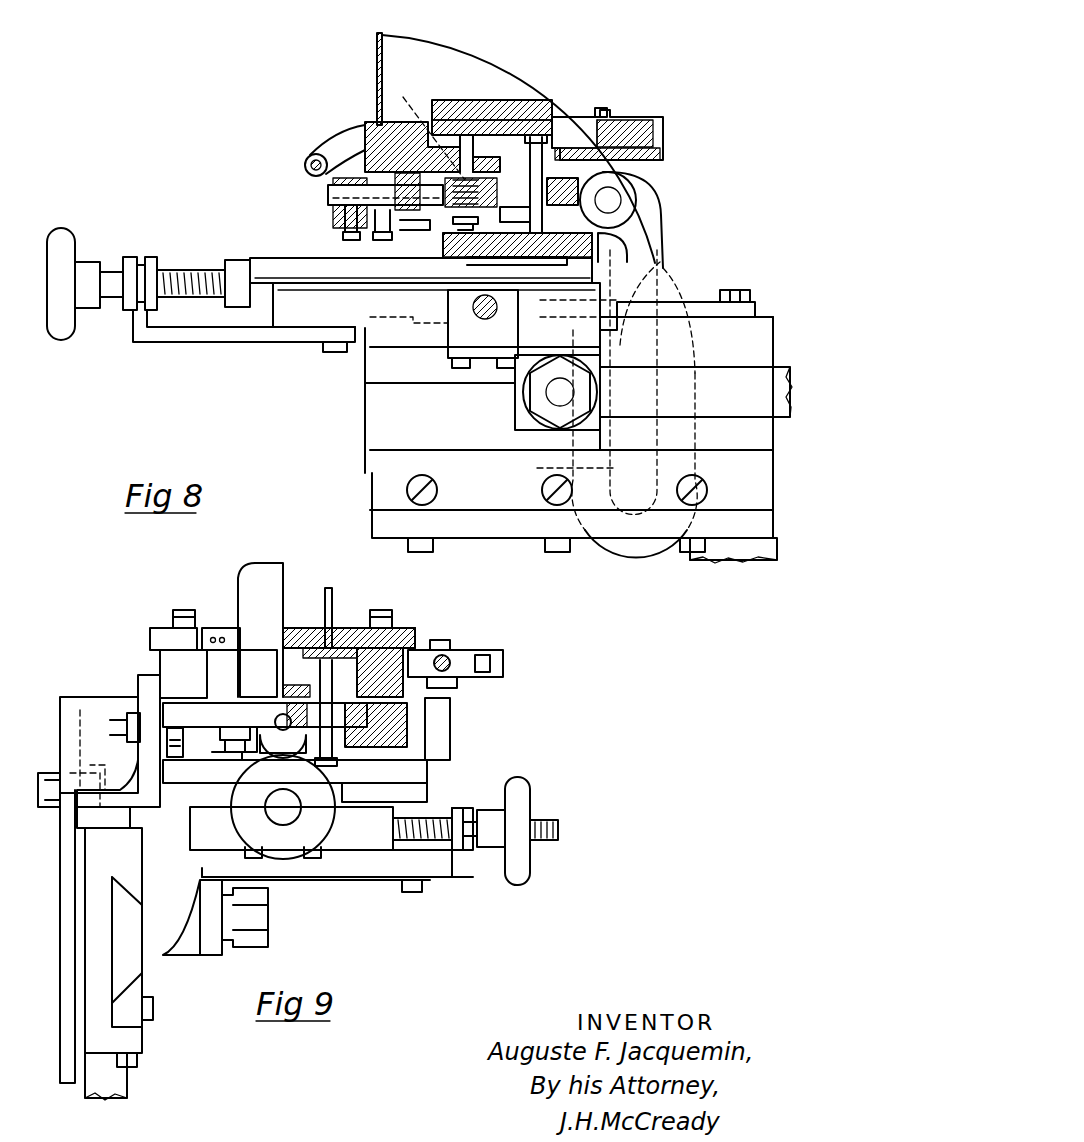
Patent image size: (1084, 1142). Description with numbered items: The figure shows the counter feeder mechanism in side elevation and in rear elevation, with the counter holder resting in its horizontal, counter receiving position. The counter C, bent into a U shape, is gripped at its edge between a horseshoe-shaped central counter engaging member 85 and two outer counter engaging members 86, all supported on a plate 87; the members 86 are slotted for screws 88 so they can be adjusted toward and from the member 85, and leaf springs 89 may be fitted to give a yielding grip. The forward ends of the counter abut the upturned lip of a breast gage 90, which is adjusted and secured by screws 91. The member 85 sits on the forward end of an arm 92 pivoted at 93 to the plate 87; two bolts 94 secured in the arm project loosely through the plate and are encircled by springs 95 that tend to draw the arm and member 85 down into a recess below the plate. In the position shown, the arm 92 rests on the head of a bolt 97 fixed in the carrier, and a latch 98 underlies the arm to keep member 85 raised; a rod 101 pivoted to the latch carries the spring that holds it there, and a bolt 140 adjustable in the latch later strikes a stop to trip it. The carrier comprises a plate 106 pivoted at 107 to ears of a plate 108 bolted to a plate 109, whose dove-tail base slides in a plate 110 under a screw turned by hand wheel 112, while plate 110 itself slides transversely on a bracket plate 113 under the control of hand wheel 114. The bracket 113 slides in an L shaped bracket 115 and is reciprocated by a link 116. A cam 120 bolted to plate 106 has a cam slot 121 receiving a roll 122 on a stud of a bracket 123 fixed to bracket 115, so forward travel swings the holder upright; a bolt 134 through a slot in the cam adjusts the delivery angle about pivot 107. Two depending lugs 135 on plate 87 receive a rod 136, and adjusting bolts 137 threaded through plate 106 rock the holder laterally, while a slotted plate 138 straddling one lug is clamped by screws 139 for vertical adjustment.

In FIG. 8, the counter C is at (460, 57).
In FIG. 9, the counter C is at (275, 580).
In FIG. 8, the central counter engaging member 85 is at (520, 105).
In FIG. 9, the central counter engaging member 85 is at (293, 628).
In FIG. 8, the outer counter engaging members 86 is at (376, 115).
In FIG. 9, the outer counter engaging members 86 is at (160, 632).
In FIG. 8, the plate 87 is at (365, 128).
In FIG. 9, the plate 87 is at (412, 652).
In FIG. 9, the screws 88 is at (182, 615).
In FIG. 9, the leaf springs 89 is at (215, 625).
In FIG. 8, the breast gage 90 is at (580, 118).
In FIG. 8, the screws 91 is at (598, 110).
In FIG. 8, the arm 92 is at (492, 100).
In FIG. 9, the arm 92 is at (355, 628).
In FIG. 8, the pivot 93 is at (310, 165).
In FIG. 9, the pivot 93 is at (240, 688).
In FIG. 8, the bolts 94 is at (467, 140).
In FIG. 9, the bolts 94 is at (235, 752).
In FIG. 8, the springs 95 is at (426, 127).
In FIG. 8, the bolt 97 is at (530, 165).
In FIG. 9, the bolt 97 is at (300, 672).
In FIG. 8, the latch 98 is at (605, 110).
In FIG. 9, the latch 98 is at (457, 653).
In FIG. 9, the rod 101 is at (460, 678).
In FIG. 8, the carrier plate 106 is at (582, 185).
In FIG. 9, the carrier plate 106 is at (410, 722).
In FIG. 8, the pivot 107 is at (612, 198).
In FIG. 9, the pivot 107 is at (60, 715).
In FIG. 8, the plate 108 is at (623, 250).
In FIG. 9, the plate 108 is at (420, 771).
In FIG. 8, the plate 109 is at (270, 265).
In FIG. 9, the plate 109 is at (345, 795).
In FIG. 8, the plate 110 is at (300, 310).
In FIG. 9, the plate 110 is at (375, 858).
In FIG. 8, the hand wheel 112 is at (65, 240).
In FIG. 9, the hand wheel 112 is at (320, 860).
In FIG. 8, the bracket plate 113 is at (385, 345).
In FIG. 9, the bracket plate 113 is at (128, 945).
In FIG. 9, the hand wheel 114 is at (530, 803).
In FIG. 8, the L shaped bracket 115 is at (380, 520).
In FIG. 9, the L shaped bracket 115 is at (125, 1048).
In FIG. 8, the link 116 is at (750, 380).
In FIG. 9, the link 116 is at (218, 952).
In FIG. 8, the cam 120 is at (643, 565).
In FIG. 9, the cam 120 is at (138, 680).
In FIG. 8, the cam slot 121 is at (560, 470).
In FIG. 9, the roll 122 is at (70, 775).
In FIG. 8, the bracket 123 is at (627, 265).
In FIG. 9, the bracket 123 is at (92, 810).
In FIG. 9, the bolt 134 is at (128, 720).
In FIG. 8, the depending lugs 135 is at (530, 213).
In FIG. 9, the depending lugs 135 is at (280, 745).
In FIG. 8, the rod 136 is at (328, 195).
In FIG. 9, the rod 136 is at (276, 722).
In FIG. 8, the adjusting bolts 137 is at (378, 235).
In FIG. 9, the adjusting bolts 137 is at (177, 757).
In FIG. 8, the plate 138 is at (453, 224).
In FIG. 9, the plate 138 is at (236, 735).
In FIG. 9, the screws 139 is at (270, 768).
In FIG. 9, the bolt 140 is at (492, 663).